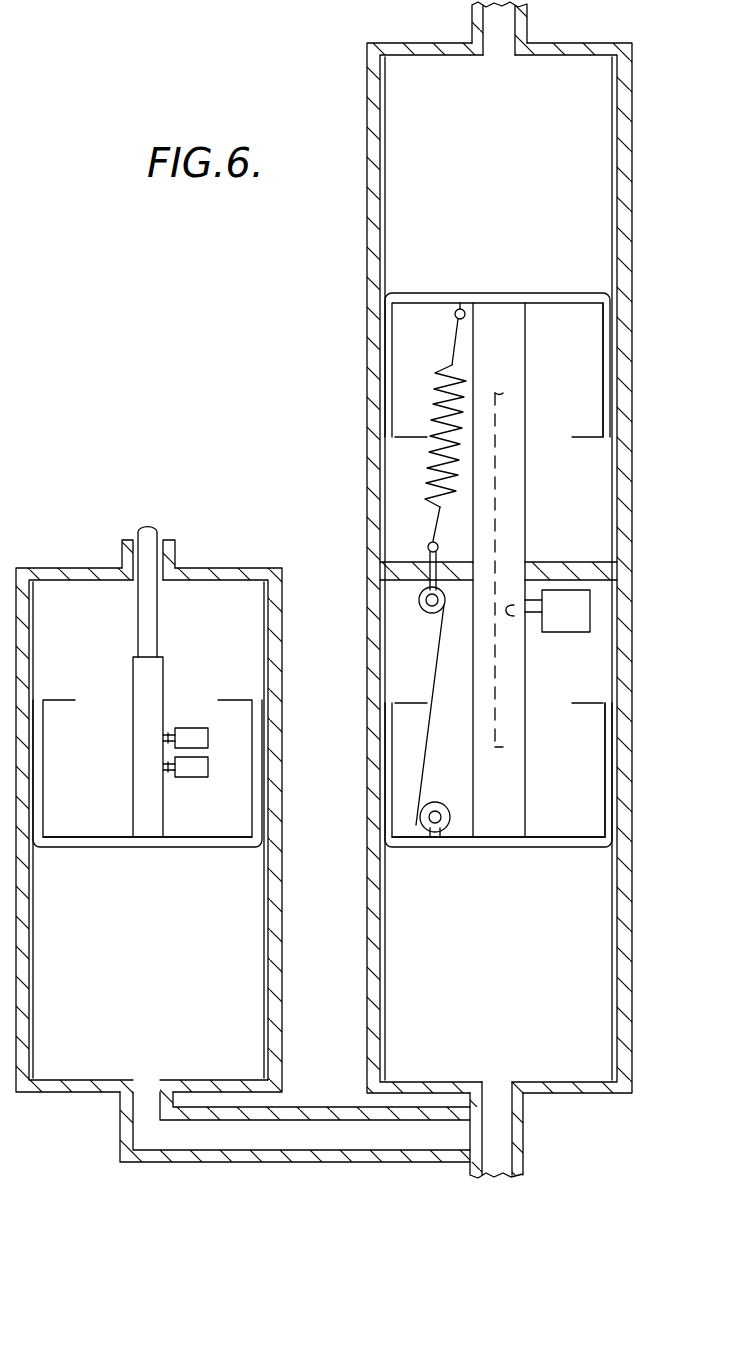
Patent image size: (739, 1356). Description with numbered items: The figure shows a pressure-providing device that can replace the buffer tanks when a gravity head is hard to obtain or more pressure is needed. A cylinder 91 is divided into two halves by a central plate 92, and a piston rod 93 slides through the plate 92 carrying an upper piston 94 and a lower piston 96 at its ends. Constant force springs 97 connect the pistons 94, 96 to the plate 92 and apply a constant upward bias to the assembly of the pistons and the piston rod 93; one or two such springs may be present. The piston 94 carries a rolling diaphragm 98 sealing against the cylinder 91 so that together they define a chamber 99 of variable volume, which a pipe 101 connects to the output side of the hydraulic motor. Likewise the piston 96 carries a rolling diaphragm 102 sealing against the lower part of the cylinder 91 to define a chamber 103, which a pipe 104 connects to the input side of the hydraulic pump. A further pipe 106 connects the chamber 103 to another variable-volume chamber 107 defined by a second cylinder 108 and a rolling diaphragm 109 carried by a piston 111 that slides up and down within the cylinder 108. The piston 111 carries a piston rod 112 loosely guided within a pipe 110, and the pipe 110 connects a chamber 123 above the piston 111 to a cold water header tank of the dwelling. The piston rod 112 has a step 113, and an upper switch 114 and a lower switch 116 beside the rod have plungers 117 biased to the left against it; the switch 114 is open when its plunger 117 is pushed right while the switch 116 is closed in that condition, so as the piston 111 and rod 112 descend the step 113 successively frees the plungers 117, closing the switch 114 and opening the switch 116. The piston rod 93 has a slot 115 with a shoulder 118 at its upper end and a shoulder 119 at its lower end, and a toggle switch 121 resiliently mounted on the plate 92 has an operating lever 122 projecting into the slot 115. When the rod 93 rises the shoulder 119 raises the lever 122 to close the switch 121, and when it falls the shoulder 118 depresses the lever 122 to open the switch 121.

The cylinder 91 is at (628, 665).
The central plate 92 is at (536, 568).
The piston rod 93 is at (512, 797).
The piston 94 is at (548, 297).
The piston 96 is at (572, 846).
The constant force springs 97 is at (430, 466).
The rolling diaphragm 98 is at (610, 343).
The chamber 99 is at (520, 153).
The pipe 101 is at (527, 17).
The rolling diaphragm 102 is at (607, 757).
The chamber 103 is at (520, 992).
The pipe 104 is at (520, 1148).
The pipe 106 is at (305, 1160).
The chamber 107 is at (172, 994).
The cylinder 108 is at (22, 910).
The rolling diaphragm 109 is at (43, 800).
The pipe 110 is at (125, 550).
The piston 111 is at (50, 845).
The piston rod 112 is at (138, 737).
The step 113 is at (135, 657).
The upper switch 114 is at (200, 738).
The slot 115 is at (497, 490).
The lower switch 116 is at (200, 765).
The plungers 117 is at (168, 767).
The shoulder 118 is at (498, 395).
The shoulder 119 is at (508, 742).
The toggle switch 121 is at (566, 633).
The operating lever 122 is at (538, 615).
The chamber 123 is at (190, 598).